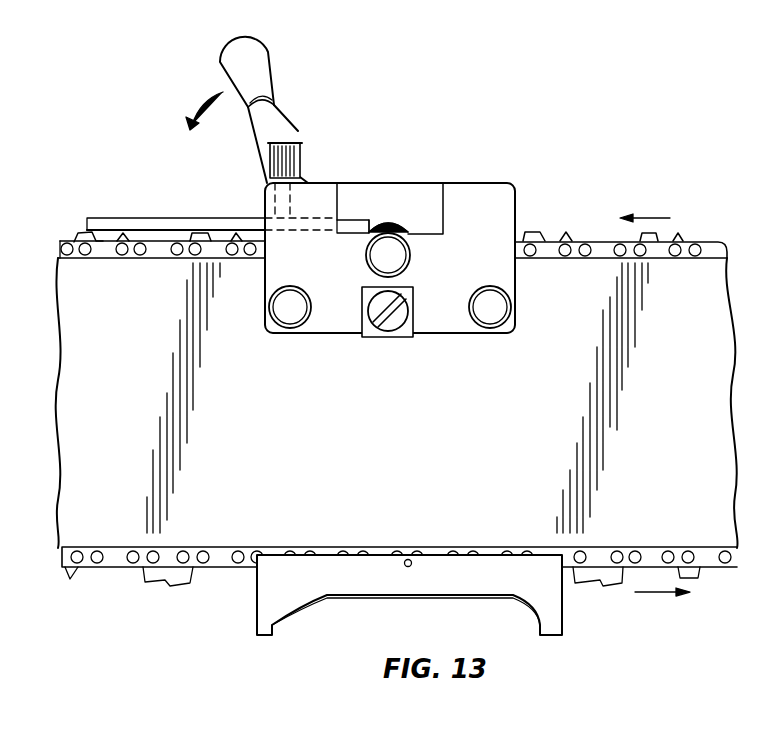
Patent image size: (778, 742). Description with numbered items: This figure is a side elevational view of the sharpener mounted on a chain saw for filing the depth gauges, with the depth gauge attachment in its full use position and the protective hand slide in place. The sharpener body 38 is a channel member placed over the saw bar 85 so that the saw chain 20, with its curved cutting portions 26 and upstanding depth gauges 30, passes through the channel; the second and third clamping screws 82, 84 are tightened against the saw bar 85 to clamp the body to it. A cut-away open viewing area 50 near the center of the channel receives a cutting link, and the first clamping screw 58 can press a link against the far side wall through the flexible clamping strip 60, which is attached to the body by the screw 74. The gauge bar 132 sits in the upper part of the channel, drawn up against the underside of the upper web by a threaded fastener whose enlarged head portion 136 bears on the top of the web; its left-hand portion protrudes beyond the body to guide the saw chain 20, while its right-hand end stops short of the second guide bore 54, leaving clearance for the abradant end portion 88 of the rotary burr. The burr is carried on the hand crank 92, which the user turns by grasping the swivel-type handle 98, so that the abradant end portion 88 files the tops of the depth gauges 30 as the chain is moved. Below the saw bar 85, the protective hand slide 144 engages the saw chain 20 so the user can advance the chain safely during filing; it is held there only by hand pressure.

The saw chain 20 is at (710, 241).
The curved cutting portion 26 is at (83, 232).
The depth gauge 30 is at (125, 235).
The sharpener body 38 is at (487, 190).
The open viewing area 50 is at (430, 190).
The second horizontal guide bore 54 is at (372, 222).
The first clamping screw 58 is at (395, 260).
The flexible clamping strip 60 is at (403, 337).
The screw 74 is at (385, 330).
The second clamping screw 82 is at (510, 307).
The third clamping screw 84 is at (270, 303).
The saw bar 85 is at (482, 441).
The abradant end portion 88 is at (392, 225).
The hand crank 92 is at (277, 122).
The swivel-type handle 98 is at (265, 66).
The gauge bar 132 is at (160, 218).
The enlarged head portion 136 is at (290, 155).
The protective hand slide 144 is at (348, 590).